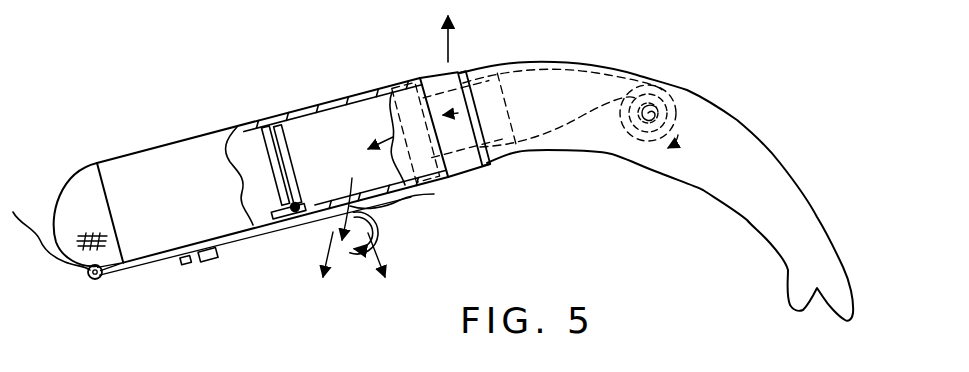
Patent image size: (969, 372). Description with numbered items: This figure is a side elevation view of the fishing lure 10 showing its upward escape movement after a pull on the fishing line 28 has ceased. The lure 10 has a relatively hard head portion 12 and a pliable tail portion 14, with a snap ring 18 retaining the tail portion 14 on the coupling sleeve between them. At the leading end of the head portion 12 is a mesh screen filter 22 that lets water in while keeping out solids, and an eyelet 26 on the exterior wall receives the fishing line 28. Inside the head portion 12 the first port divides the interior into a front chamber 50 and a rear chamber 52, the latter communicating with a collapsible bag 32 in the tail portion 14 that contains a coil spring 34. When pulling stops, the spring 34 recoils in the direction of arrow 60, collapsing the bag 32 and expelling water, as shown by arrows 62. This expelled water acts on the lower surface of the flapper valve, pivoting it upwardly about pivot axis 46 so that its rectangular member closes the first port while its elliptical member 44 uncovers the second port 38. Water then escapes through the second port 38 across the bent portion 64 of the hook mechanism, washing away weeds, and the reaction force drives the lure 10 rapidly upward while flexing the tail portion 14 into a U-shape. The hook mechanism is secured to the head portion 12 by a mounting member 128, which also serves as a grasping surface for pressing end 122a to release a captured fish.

The fishing lure 10 is at (262, 47).
The head portion 12 is at (358, 93).
The tail portion 14 is at (637, 73).
The snap ring 18 is at (458, 75).
The mesh screen filter 22 is at (80, 190).
The eyelet 26 is at (100, 282).
The fishing line 28 is at (45, 250).
The collapsible bag 32 is at (612, 42).
The coil spring 34 is at (667, 110).
The second port 38 is at (423, 195).
The elliptical member 44 is at (288, 145).
The pivot axis 46 is at (296, 212).
The front chamber 50 is at (240, 133).
The rear chamber 52 is at (325, 108).
The arrow 60 is at (678, 135).
The arrows 62 is at (352, 178).
The bent portion 64 is at (382, 233).
The end 122a is at (182, 264).
The mounting member 128 is at (207, 260).